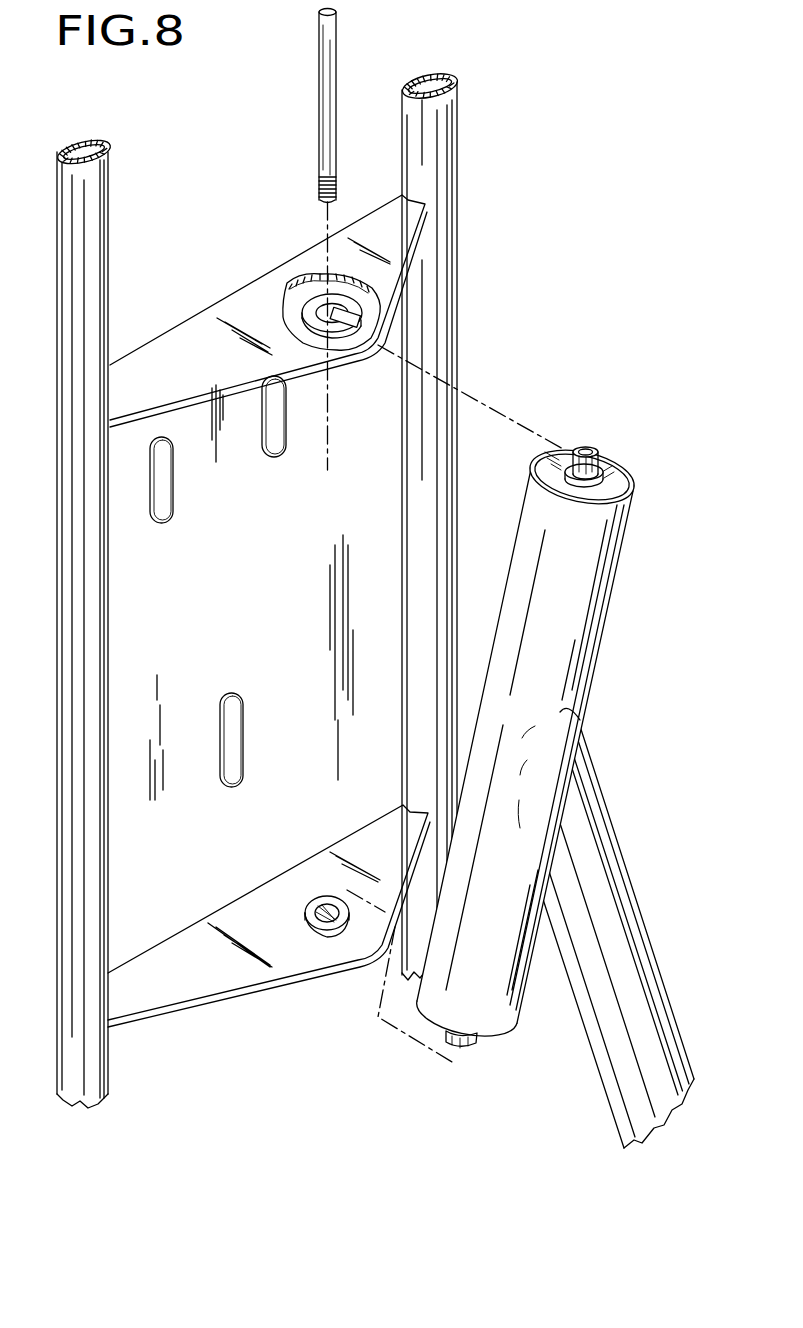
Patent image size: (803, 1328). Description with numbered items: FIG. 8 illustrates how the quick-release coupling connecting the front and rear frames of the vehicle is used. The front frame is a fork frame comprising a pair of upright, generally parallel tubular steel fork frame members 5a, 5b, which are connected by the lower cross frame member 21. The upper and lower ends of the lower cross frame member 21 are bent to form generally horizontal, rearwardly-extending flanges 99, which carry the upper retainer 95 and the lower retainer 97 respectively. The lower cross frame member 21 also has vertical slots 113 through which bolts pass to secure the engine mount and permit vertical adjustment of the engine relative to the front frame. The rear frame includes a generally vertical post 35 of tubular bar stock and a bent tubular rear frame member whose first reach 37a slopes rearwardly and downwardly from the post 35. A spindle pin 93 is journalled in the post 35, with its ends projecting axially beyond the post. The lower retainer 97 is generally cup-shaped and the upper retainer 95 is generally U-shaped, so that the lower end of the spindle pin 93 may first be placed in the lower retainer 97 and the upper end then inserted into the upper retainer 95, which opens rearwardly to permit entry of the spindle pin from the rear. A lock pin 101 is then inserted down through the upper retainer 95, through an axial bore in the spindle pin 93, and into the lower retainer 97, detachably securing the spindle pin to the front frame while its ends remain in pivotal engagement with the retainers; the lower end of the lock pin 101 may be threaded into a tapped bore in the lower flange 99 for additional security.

The fork frame member 5a is at (110, 243).
The fork frame member 5b is at (458, 265).
The lower cross frame member 21 is at (138, 660).
The post 35 is at (598, 653).
The first reach 37a is at (648, 932).
The spindle pin 93 is at (600, 470).
The upper retainer 95 is at (320, 340).
The lower retainer 97 is at (307, 910).
The flange 99 is at (192, 330).
The lock pin 101 is at (337, 47).
The vertical slot 113 is at (172, 490).